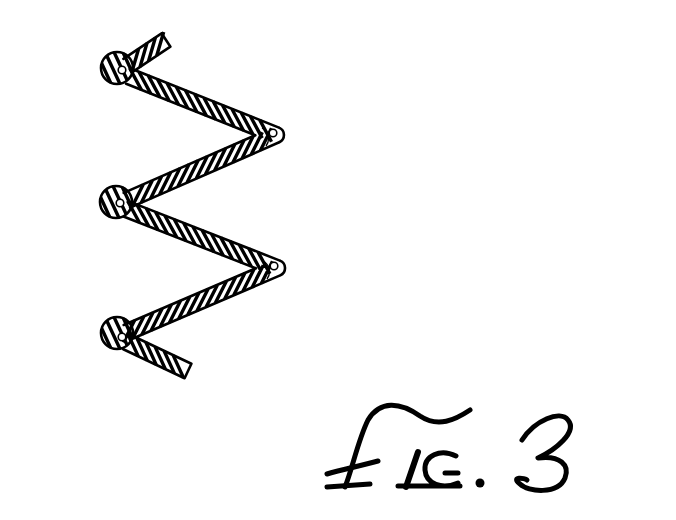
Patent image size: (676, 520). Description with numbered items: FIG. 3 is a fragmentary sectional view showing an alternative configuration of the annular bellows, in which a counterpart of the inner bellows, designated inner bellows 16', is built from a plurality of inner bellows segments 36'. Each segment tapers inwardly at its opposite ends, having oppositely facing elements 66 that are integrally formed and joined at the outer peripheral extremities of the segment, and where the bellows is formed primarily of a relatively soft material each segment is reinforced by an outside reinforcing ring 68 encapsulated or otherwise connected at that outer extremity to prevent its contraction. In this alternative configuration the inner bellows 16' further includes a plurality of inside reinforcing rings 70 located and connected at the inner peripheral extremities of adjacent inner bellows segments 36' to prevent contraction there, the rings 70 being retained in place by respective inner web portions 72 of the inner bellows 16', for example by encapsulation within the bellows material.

The inner bellows 16' is at (180, 245).
The inner bellows segments 36' is at (180, 205).
The oppositely facing elements 66 is at (128, 95).
The outside reinforcing ring 68 is at (127, 70).
The inside reinforcing rings 70 is at (275, 127).
The inner web portions 72 is at (267, 253).